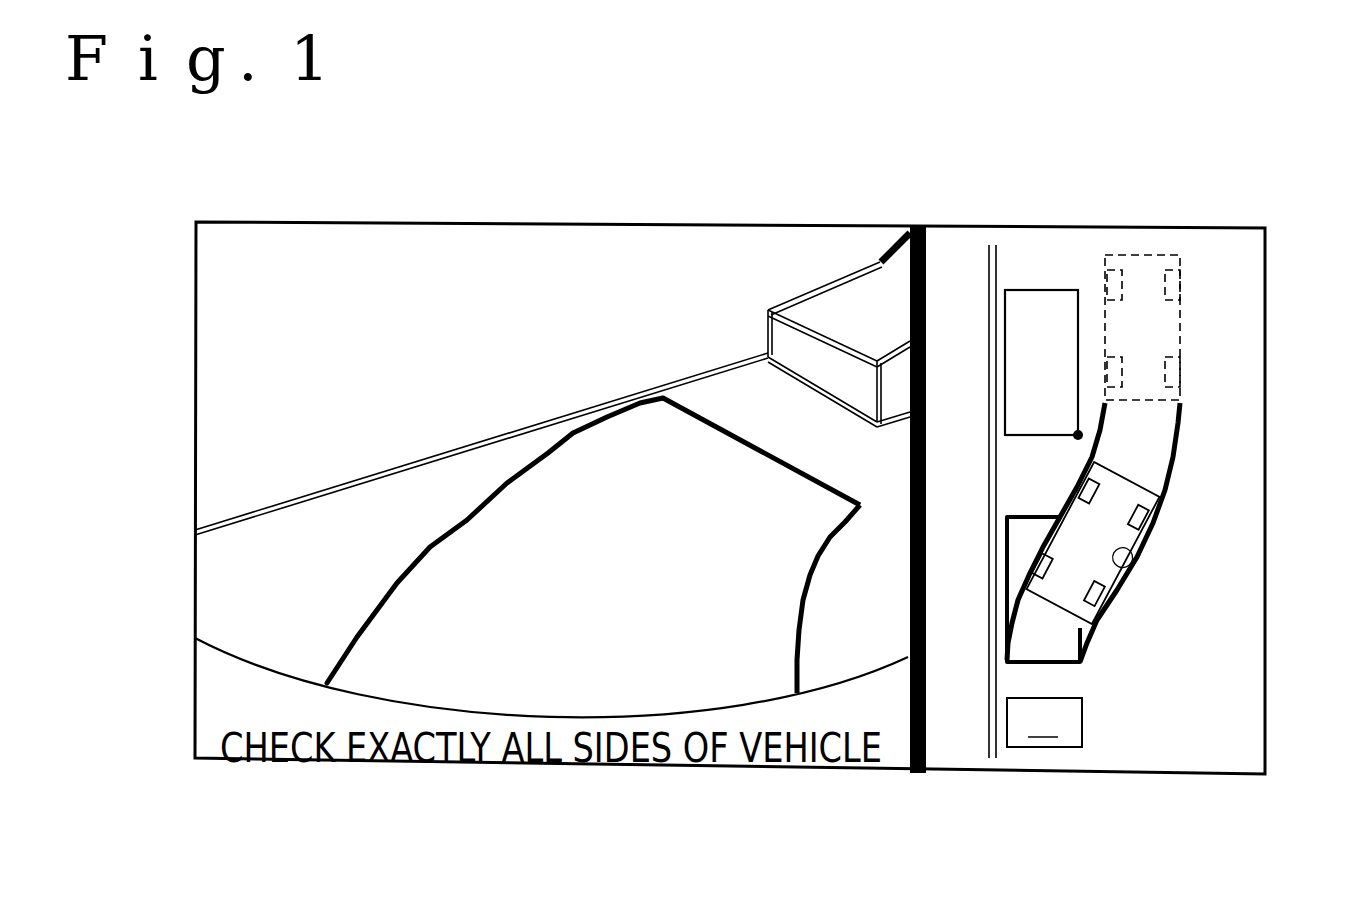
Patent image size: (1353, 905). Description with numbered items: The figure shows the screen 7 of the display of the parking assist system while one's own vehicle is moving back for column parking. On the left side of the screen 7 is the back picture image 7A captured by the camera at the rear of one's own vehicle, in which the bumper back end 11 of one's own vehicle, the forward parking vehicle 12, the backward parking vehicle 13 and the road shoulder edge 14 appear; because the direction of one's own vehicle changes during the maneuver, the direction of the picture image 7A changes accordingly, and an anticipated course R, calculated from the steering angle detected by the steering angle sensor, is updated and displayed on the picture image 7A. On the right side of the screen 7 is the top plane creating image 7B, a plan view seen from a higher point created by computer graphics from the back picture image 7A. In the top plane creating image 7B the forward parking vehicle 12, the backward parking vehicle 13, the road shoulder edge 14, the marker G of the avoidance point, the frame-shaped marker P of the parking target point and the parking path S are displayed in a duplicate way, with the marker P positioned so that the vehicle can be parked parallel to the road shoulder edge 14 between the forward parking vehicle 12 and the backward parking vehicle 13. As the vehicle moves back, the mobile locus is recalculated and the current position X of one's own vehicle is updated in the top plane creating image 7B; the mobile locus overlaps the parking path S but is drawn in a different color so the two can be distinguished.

The screen 7 is at (518, 213).
The back picture image 7A is at (240, 250).
The top plane creating image 7B is at (1251, 238).
The bumper back end 11 is at (865, 775).
The forward parking vehicle 12 is at (1028, 380).
The backward parking vehicle 13 is at (838, 302).
The road shoulder edge 14 is at (268, 507).
The anticipated course R is at (372, 600).
The marker of the avoidance point G is at (1078, 435).
The parking path S is at (1175, 453).
The current position X is at (1130, 565).
The marker of the parking target point P is at (1043, 663).